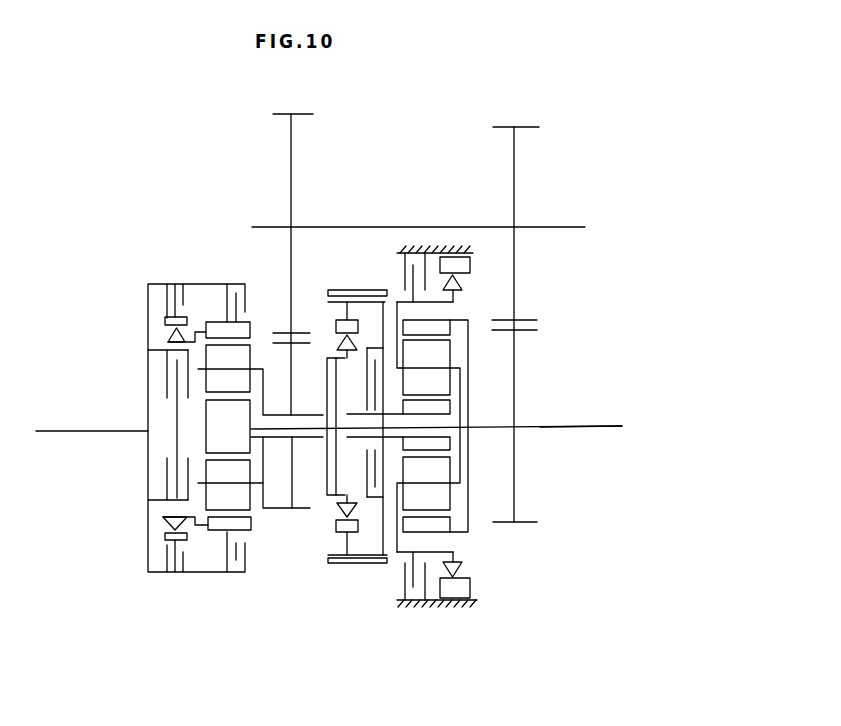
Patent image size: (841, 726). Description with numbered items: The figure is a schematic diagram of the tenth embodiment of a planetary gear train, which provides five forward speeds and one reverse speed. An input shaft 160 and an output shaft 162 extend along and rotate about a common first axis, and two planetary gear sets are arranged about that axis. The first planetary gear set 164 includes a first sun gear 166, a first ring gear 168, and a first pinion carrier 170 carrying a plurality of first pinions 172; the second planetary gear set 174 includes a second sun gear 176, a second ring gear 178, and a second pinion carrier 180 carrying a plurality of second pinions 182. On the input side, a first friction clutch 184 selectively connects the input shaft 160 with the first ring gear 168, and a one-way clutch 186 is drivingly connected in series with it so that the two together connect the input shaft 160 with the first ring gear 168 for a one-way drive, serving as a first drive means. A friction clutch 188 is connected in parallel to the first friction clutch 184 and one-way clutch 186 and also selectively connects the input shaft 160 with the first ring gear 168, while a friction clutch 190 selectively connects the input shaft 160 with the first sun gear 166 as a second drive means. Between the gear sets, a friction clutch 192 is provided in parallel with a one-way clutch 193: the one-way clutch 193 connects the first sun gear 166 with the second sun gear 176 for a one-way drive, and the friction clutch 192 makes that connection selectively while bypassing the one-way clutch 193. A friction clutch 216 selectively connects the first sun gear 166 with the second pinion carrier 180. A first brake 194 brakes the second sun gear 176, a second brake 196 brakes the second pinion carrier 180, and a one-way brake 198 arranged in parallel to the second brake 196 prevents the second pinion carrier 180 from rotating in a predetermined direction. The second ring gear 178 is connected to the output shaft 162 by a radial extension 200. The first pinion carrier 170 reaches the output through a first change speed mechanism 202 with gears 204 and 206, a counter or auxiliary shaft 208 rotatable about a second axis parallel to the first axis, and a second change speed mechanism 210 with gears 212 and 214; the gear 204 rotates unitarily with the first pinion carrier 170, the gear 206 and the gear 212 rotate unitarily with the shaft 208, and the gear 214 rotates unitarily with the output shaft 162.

The input shaft 160 is at (104, 433).
The output shaft 162 is at (569, 428).
The first planetary gear set 164 is at (200, 439).
The first sun gear 166 is at (245, 447).
The first ring gear 168 is at (218, 532).
The first pinion carrier 170 is at (263, 398).
The first pinions 172 is at (210, 497).
The second planetary gear set 174 is at (480, 453).
The second sun gear 176 is at (443, 408).
The second ring gear 178 is at (440, 328).
The second pinion carrier 180 is at (460, 382).
The second pinions 182 is at (443, 467).
The first friction clutch 184 is at (167, 295).
The one-way clutch 186 is at (165, 323).
The friction clutch 188 is at (226, 300).
The friction clutch 190 is at (165, 360).
The friction clutch 192 is at (367, 500).
The one-way clutch 193 is at (335, 528).
The first brake 194 is at (345, 565).
The second brake 196 is at (401, 585).
The one-way brake 198 is at (462, 602).
The radial extension 200 is at (470, 517).
The first change speed mechanism 202 is at (166, 224).
The gear 204 is at (289, 383).
The gear 206 is at (291, 198).
The counter or auxiliary shaft 208 is at (382, 226).
The second change speed mechanism 210 is at (567, 324).
The gear 212 is at (515, 301).
The gear 214 is at (515, 347).
The friction clutch 216 is at (323, 488).